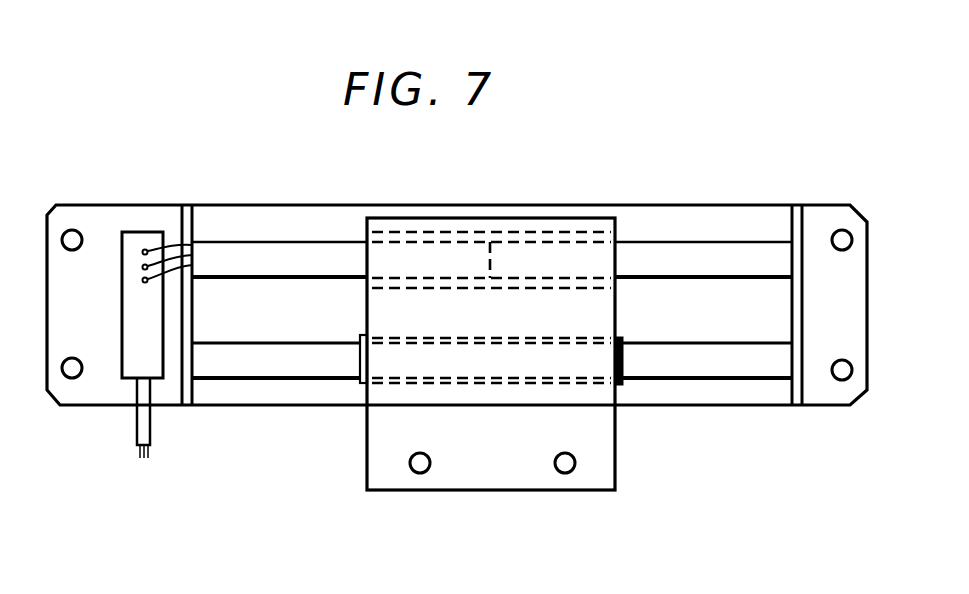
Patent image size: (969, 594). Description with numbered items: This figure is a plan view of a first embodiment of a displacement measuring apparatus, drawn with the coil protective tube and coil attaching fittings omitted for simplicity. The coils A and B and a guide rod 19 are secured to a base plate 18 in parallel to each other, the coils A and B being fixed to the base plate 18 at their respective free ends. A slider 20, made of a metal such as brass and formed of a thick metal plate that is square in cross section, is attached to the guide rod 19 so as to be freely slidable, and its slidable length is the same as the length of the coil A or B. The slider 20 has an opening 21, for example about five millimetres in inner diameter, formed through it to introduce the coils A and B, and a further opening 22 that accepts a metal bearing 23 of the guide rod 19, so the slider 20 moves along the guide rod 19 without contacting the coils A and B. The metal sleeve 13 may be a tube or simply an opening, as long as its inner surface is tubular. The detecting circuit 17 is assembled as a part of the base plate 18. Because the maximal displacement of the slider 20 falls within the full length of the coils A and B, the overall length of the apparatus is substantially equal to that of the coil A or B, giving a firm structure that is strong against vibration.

The metal sleeve 13 is at (410, 223).
The detecting circuit 17 is at (130, 357).
The base plate 18 is at (820, 226).
The guide rod 19 is at (248, 362).
The slider 20 is at (616, 471).
The opening 21 is at (615, 280).
The opening 22 is at (625, 342).
The metal bearing 23 is at (358, 358).
The coil A is at (268, 257).
The coil B is at (688, 255).